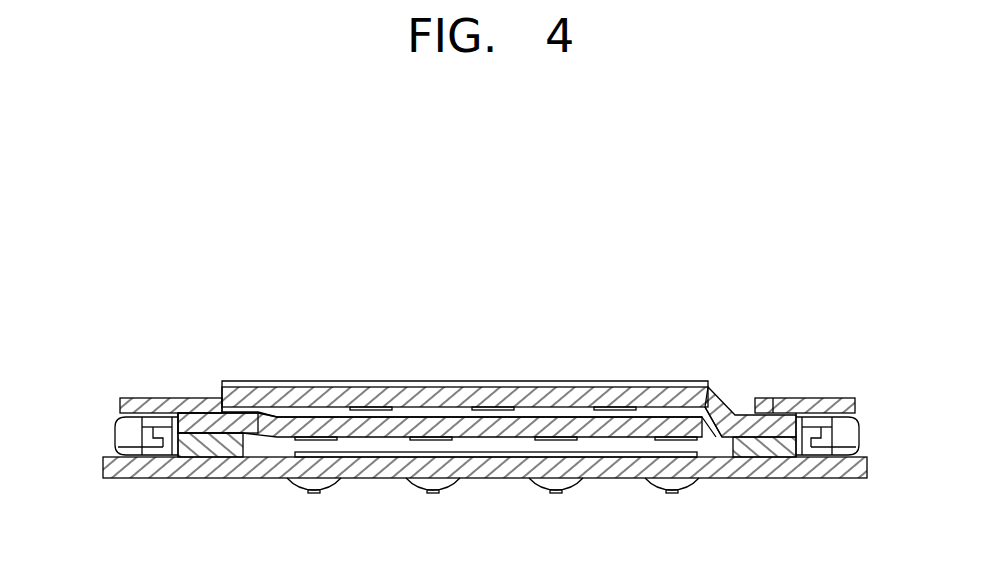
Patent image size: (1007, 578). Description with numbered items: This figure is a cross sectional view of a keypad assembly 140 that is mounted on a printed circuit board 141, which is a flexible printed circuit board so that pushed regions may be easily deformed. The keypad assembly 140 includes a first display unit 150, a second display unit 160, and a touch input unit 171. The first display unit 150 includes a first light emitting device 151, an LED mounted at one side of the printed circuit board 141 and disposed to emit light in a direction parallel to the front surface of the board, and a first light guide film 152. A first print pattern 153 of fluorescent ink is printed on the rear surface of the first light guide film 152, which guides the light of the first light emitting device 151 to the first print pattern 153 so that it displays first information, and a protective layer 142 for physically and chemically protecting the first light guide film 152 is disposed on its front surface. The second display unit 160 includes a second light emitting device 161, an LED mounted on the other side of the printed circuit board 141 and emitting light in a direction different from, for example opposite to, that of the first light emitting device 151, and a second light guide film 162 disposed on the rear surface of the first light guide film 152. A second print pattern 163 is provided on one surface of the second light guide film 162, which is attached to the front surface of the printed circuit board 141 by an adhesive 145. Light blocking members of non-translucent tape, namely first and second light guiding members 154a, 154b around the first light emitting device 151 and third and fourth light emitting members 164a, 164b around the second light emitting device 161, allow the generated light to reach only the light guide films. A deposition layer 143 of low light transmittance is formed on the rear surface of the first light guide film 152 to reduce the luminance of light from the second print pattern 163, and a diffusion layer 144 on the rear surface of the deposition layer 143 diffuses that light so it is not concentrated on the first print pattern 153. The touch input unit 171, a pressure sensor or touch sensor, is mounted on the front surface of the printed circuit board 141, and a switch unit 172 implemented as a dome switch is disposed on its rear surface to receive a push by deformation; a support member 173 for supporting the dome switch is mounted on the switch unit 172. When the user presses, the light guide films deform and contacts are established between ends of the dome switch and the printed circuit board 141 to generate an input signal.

The keypad assembly 140 is at (100, 346).
The printed circuit board 141 is at (867, 466).
The protective layer 142 is at (430, 384).
The deposition layer 143 is at (574, 411).
The diffusion layer 144 is at (526, 417).
The adhesive 145 is at (376, 446).
The first display unit 150 is at (830, 338).
The first light emitting device 151 is at (820, 420).
The first light guide film 152 is at (775, 418).
The first print pattern 153 is at (618, 409).
The first light guiding member 154a is at (855, 407).
The second light guiding member 154b is at (765, 446).
The second display unit 160 is at (212, 340).
The second light emitting device 161 is at (150, 418).
The second light guide film 162 is at (196, 418).
The second print pattern 163 is at (317, 441).
The third light emitting member 164a is at (120, 409).
The fourth light emitting member 164b is at (209, 446).
The touch input unit 171 is at (497, 455).
The switch unit 172 is at (569, 486).
The support member 173 is at (557, 492).